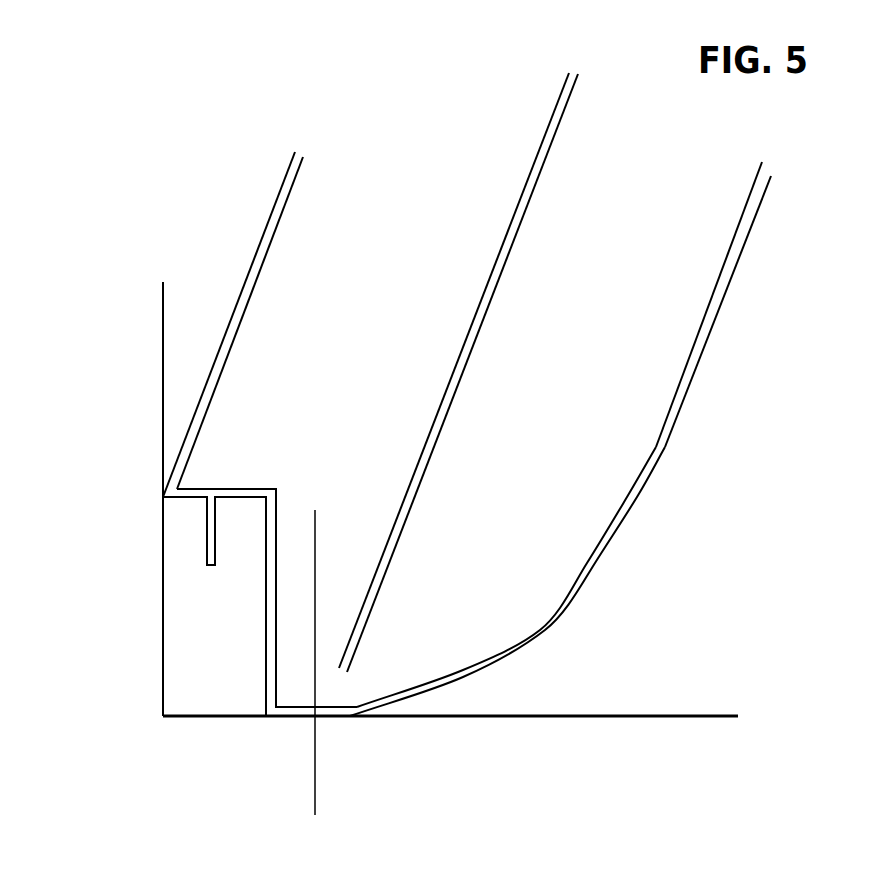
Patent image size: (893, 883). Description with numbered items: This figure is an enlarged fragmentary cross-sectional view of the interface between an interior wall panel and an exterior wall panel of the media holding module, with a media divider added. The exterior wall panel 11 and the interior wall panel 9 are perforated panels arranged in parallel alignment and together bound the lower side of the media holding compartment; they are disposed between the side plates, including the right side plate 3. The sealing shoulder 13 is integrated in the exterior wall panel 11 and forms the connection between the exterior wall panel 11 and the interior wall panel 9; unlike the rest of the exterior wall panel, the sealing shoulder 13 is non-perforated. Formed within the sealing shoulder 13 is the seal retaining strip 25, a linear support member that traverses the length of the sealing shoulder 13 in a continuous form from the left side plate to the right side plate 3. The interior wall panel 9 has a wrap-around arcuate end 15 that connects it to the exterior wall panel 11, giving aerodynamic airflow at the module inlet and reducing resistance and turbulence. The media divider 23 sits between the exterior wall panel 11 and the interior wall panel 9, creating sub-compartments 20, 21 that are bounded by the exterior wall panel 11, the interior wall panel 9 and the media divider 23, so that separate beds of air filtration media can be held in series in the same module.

The right side plate 3 is at (228, 681).
The interior wall panel 9 is at (698, 343).
The exterior wall panel 11 is at (263, 247).
The sealing shoulder 13 is at (263, 577).
The arcuate end 15 is at (573, 590).
The sub-compartment 20 is at (450, 637).
The sub-compartment 21 is at (314, 688).
The media divider 23 is at (467, 343).
The seal retaining strip 25 is at (207, 539).